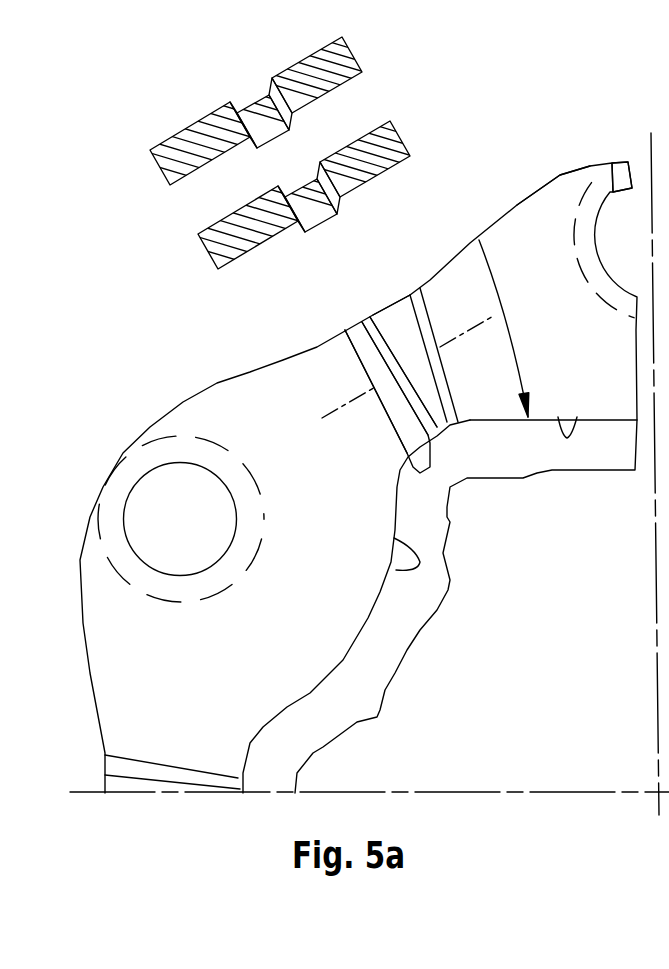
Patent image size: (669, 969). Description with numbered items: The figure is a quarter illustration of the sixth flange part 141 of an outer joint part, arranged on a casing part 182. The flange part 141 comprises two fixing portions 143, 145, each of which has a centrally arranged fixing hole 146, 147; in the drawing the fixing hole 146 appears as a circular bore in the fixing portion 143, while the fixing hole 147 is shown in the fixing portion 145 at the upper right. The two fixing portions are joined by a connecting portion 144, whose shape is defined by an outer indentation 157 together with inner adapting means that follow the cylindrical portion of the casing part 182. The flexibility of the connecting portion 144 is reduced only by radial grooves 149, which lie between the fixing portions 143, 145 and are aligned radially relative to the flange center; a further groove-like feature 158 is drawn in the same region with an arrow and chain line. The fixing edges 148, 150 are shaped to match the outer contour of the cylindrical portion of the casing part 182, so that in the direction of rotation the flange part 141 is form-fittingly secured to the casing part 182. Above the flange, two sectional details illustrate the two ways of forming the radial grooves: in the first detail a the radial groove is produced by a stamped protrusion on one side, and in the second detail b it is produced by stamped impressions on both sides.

The sixth flange part 141 is at (197, 322).
The fixing portion 143 is at (187, 422).
The connecting portion 144 is at (385, 298).
The fixing portion 145 is at (565, 200).
The fixing hole 146 is at (160, 488).
The fixing hole 147 is at (620, 217).
The fixing edge 148 is at (398, 541).
The radial grooves 149 is at (380, 332).
The fixing edge 150 is at (558, 417).
The outer indentation 157 is at (375, 315).
The rib 158 is at (402, 443).
The casing part 182 is at (483, 317).
The first detail a is at (340, 58).
The second detail b is at (398, 143).